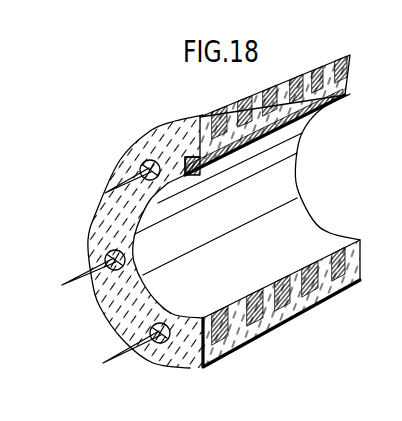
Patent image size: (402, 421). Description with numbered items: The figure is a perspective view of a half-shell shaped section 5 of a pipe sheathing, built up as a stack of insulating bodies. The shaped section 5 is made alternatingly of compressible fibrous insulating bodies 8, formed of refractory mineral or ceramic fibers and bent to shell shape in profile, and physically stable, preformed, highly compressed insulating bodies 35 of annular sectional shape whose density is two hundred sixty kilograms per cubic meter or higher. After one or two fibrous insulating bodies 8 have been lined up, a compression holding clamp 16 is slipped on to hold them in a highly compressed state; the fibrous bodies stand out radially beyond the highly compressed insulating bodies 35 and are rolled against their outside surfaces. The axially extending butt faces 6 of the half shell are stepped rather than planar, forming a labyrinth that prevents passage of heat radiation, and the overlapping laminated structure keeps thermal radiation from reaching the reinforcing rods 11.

The shaped section 5 is at (172, 128).
The butt face 6 is at (352, 262).
The flat insulating body 8 is at (296, 313).
The reinforcing rod 11 is at (127, 358).
The compression holding clamp 16 is at (160, 343).
The highly compressed insulating body 35 is at (232, 346).